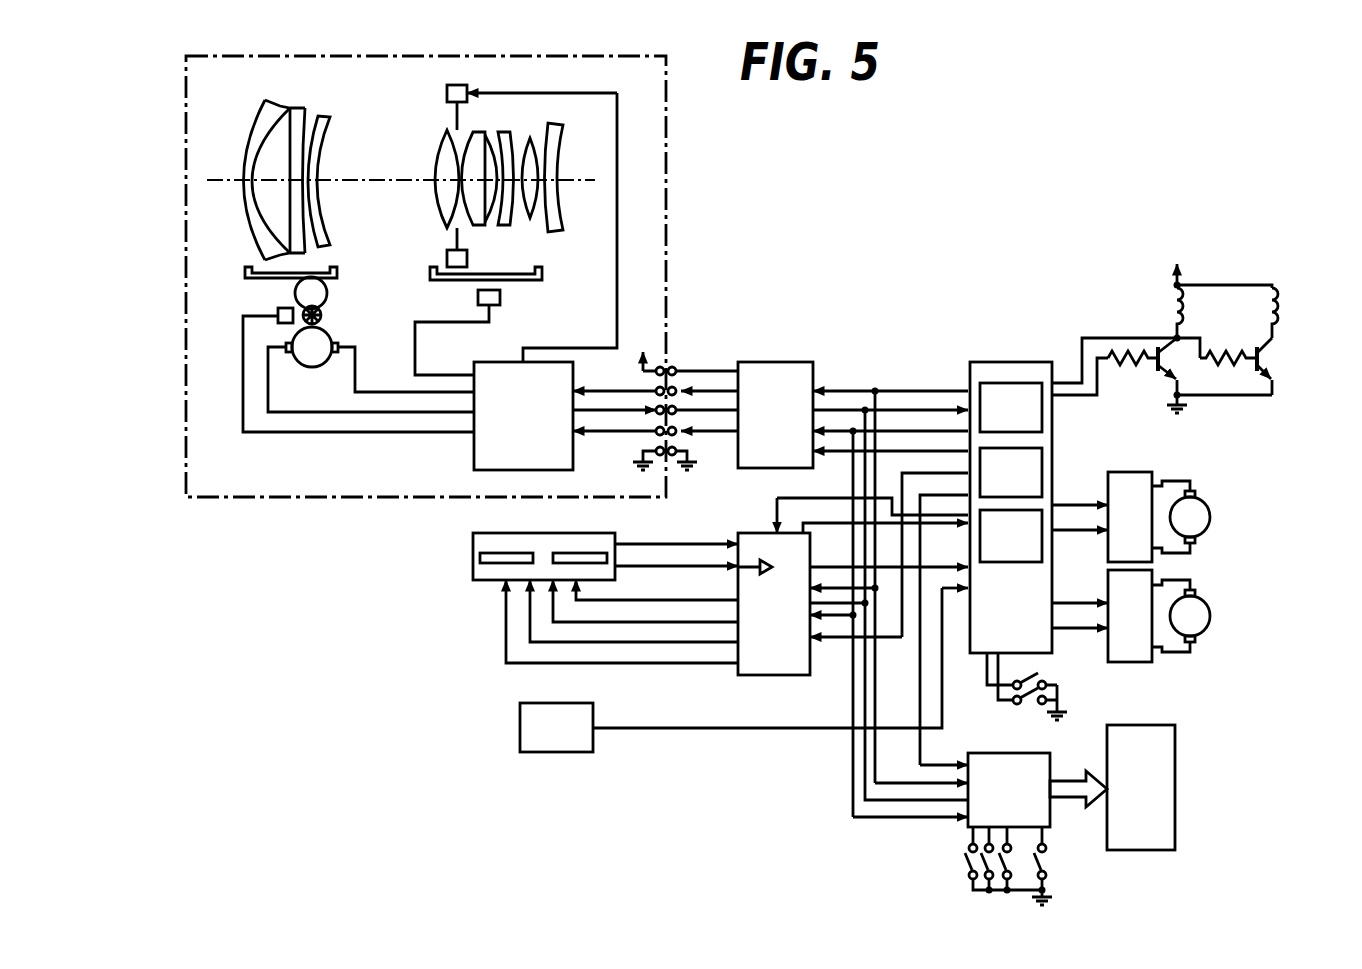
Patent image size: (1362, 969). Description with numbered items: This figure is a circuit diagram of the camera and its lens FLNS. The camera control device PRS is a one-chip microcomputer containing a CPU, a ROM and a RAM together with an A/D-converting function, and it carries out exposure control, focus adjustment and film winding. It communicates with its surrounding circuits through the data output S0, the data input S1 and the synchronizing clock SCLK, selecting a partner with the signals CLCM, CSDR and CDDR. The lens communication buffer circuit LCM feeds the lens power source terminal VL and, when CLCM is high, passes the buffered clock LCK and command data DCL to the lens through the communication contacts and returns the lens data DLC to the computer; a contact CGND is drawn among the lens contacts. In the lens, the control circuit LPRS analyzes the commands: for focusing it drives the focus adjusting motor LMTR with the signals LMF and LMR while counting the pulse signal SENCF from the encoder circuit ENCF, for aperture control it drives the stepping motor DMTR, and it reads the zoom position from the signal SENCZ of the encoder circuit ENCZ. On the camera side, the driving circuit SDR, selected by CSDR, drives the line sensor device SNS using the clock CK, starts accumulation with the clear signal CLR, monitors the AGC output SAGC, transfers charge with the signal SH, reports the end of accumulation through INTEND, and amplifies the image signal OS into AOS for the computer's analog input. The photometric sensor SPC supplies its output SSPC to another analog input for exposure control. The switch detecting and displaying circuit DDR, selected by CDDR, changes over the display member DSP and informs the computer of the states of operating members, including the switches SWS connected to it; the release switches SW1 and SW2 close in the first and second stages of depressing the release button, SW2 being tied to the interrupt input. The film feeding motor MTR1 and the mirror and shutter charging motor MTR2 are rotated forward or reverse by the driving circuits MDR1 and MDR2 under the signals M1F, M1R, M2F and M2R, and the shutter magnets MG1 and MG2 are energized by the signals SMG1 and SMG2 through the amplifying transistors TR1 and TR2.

The lens FLNS is at (658, 90).
The stepping motor DMTR is at (460, 85).
The focus adjusting motor LMTR is at (318, 330).
The encoder circuit ENCF is at (283, 309).
The encoder circuit ENCZ is at (500, 297).
The control circuit LPRS is at (523, 416).
The lens communication buffer circuit LCM is at (775, 415).
The line sensor device SNS is at (613, 533).
The driving circuit SDR is at (774, 604).
The photometric sensor SPC is at (556, 727).
The control device PRS is at (1011, 507).
The central processing unit CPU is at (1011, 407).
The element ROM is at (1011, 472).
The element RAM is at (1011, 536).
The switch detecting and displaying circuit DDR is at (1009, 790).
The display member DSP is at (1141, 787).
The driving circuit MDR1 is at (1130, 517).
The driving circuit MDR2 is at (1130, 616).
The film feeding motor MTR1 is at (1210, 517).
The mirror up-down and shutter spring charging motor MTR2 is at (1210, 616).
The magnet MG1 is at (1279, 307).
The magnet MG2 is at (1184, 307).
The amplifying transistor TR1 is at (1274, 350).
The amplifying transistor TR2 is at (1168, 364).
The switch SW1 is at (1038, 674).
The switch SW2 is at (1028, 706).
The switch group SWS is at (1046, 873).
The signal SMG1 is at (1126, 350).
The signal SMG2 is at (1080, 387).
The signal SENCZ is at (452, 340).
The pulse signal SENCF is at (358, 374).
The signal LMF is at (406, 370).
The signal LMR is at (371, 379).
The power source terminal VL is at (690, 363).
The signal DCL is at (655, 383).
The signal DLC is at (655, 401).
The buffer signal LCK is at (655, 423).
The common ground line CGND is at (684, 455).
The data signal S0 is at (889, 576).
The data signal S1 is at (889, 595).
The synchronizing clock SCLK is at (889, 613).
The selecting signal CLCM is at (890, 441).
The signal CSDR is at (889, 544).
The signal CDDR is at (940, 618).
The clock CK is at (872, 512).
The signal INTEND is at (877, 518).
The amplified output signal AOS is at (889, 556).
The AGC output signal SAGC is at (676, 533).
The output signal OS is at (676, 556).
The charge transfer signal SH is at (634, 612).
The clear signal CLR is at (622, 622).
The output SSPC is at (780, 658).
The motor controlling signal M1F is at (1080, 494).
The motor controlling signal M1R is at (1080, 520).
The motor controlling signal M2F is at (1080, 593).
The motor controlling signal M2R is at (1080, 618).